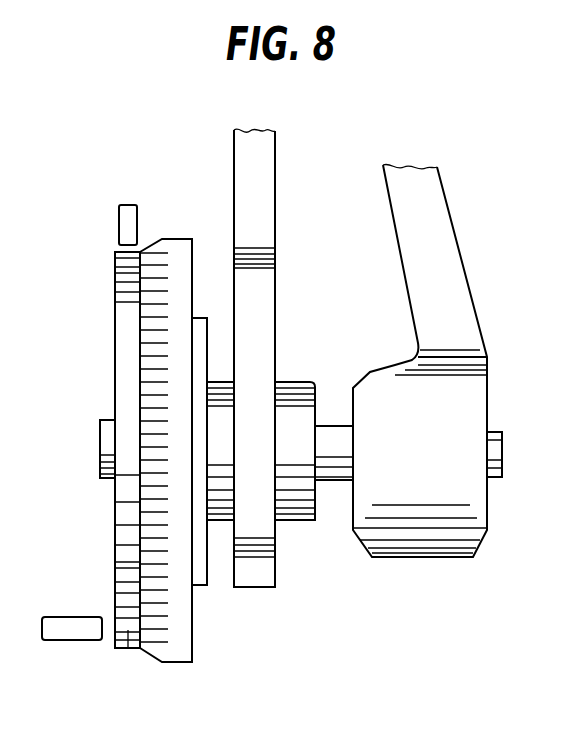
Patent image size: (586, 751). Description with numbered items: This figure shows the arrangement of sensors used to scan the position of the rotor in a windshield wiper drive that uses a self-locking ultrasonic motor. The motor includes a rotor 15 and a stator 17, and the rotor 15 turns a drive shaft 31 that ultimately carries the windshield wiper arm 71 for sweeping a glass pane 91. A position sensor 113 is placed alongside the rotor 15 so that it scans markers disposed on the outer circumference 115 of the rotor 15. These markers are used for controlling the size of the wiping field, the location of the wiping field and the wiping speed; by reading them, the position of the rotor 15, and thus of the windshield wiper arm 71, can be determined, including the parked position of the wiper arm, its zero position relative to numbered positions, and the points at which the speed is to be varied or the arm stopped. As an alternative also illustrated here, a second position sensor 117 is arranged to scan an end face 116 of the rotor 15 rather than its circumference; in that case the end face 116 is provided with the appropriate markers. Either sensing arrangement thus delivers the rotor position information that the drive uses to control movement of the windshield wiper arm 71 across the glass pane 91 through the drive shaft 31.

The position sensor 113 is at (117, 226).
The outer circumference 115 is at (122, 328).
The end face 116 is at (114, 517).
The rotor 15 is at (127, 650).
The stator 17 is at (178, 648).
The glass pane 91 is at (234, 170).
The drive shaft 31 is at (336, 482).
The windshield wiper arm 71 is at (467, 268).
The position sensor 117 is at (67, 630).